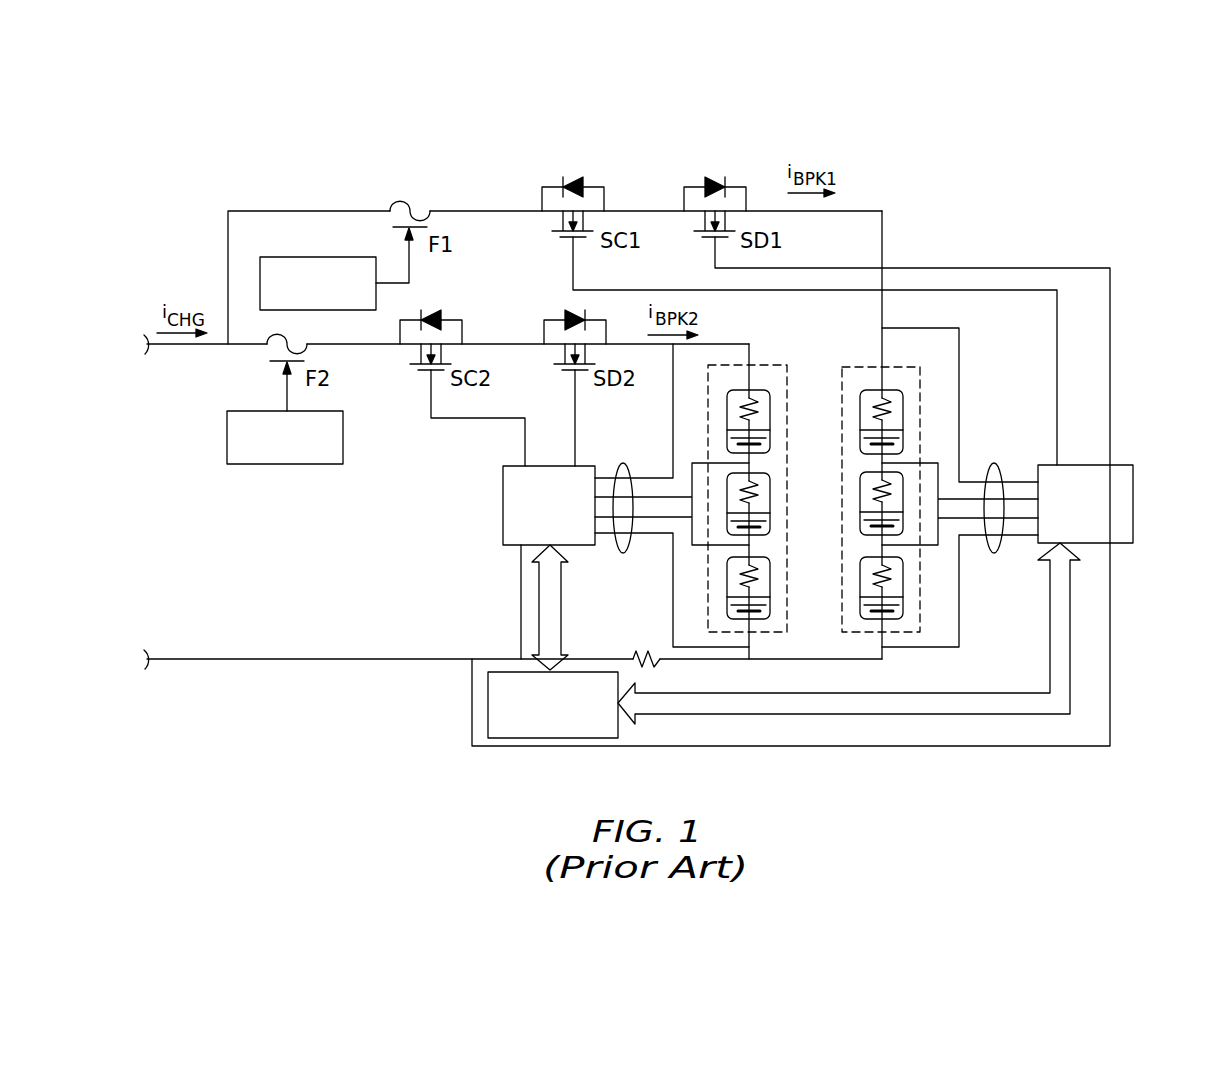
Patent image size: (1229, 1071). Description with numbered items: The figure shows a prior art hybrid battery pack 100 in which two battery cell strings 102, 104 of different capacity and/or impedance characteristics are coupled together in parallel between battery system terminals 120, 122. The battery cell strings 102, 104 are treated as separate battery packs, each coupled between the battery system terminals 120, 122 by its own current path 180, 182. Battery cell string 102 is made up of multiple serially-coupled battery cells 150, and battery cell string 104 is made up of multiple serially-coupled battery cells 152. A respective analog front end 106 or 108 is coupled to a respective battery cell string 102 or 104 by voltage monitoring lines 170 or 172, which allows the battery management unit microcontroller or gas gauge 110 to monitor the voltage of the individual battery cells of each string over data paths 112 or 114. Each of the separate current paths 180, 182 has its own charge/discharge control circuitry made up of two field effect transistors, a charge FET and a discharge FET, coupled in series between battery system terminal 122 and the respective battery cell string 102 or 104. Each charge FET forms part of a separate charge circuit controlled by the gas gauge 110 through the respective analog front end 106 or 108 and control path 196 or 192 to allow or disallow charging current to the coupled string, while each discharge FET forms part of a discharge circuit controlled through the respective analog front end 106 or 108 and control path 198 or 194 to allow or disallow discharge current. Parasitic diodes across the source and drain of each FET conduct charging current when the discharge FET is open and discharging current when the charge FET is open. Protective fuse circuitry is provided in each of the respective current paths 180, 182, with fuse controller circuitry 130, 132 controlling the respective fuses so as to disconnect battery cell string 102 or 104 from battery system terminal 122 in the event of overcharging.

The hybrid battery pack 100 is at (1156, 208).
The battery cell string 102 is at (842, 548).
The battery cell string 104 is at (788, 400).
The analog front end 106 is at (1073, 465).
The analog front end 108 is at (503, 515).
The gas gauge 110 is at (620, 727).
The data path 112 is at (772, 693).
The data path 114 is at (563, 612).
The battery system terminal 120 is at (147, 662).
The battery system terminal 122 is at (146, 350).
The fuse controller circuitry 130 is at (295, 257).
The fuse controller circuitry 132 is at (297, 464).
The battery cells 150 is at (860, 412).
The battery cells 152 is at (727, 420).
The voltage monitoring lines 170 is at (995, 465).
The voltage monitoring lines 172 is at (623, 465).
The current path 180 is at (295, 211).
The current path 182 is at (250, 347).
The control path 192 is at (445, 418).
The control path 194 is at (575, 405).
The control path 196 is at (1000, 293).
The control path 198 is at (925, 268).